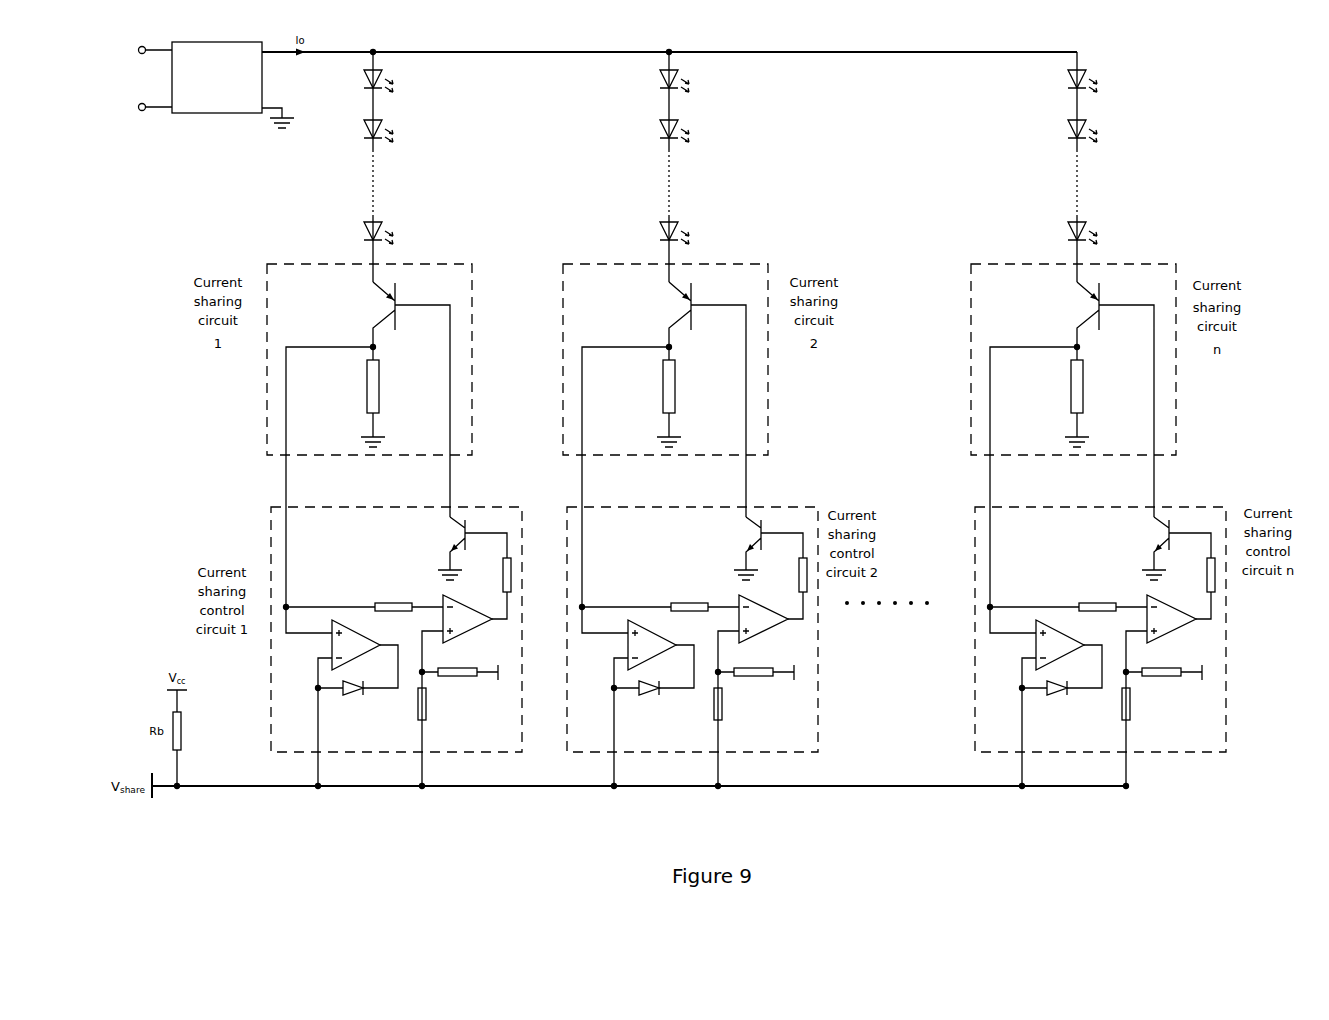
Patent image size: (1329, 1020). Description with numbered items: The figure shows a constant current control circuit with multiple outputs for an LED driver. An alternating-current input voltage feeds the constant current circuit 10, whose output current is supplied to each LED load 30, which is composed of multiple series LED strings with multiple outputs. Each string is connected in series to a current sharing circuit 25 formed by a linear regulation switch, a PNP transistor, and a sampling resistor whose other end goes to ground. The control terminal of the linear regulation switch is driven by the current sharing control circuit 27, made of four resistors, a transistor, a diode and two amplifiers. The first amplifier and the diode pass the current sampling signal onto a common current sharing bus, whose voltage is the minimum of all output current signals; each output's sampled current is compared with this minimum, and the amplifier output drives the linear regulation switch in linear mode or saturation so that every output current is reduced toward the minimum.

The constant current circuit 10 is at (206, 42).
The current sharing circuit 25 is at (227, 226).
The current sharing control circuit 27 is at (274, 502).
The LED load 30 is at (702, 130).